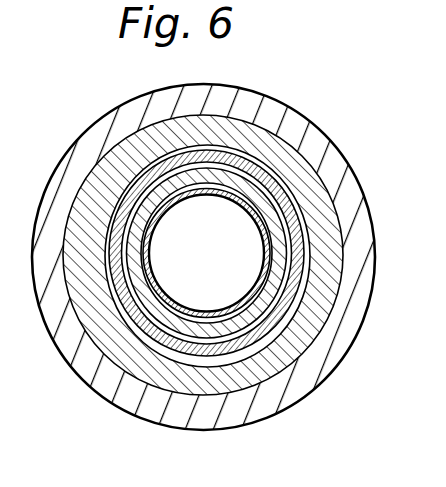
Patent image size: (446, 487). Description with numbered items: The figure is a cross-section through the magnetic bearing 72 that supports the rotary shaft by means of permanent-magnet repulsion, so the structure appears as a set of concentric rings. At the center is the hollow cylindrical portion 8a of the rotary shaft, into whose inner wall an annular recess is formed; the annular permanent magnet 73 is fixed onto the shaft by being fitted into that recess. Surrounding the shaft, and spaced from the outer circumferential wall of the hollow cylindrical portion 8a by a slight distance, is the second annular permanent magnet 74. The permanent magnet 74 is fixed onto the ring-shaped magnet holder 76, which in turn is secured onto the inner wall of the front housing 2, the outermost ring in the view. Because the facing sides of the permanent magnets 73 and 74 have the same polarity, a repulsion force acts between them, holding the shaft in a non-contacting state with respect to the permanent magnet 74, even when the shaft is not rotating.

The front housing 2 is at (279, 397).
The ring-shaped magnet holder 76 is at (282, 364).
The annular permanent magnet 74 is at (288, 332).
The annular permanent magnet 73 is at (190, 314).
The magnetic bearing 72 is at (154, 230).
The hollow cylindrical portion 8a is at (243, 300).